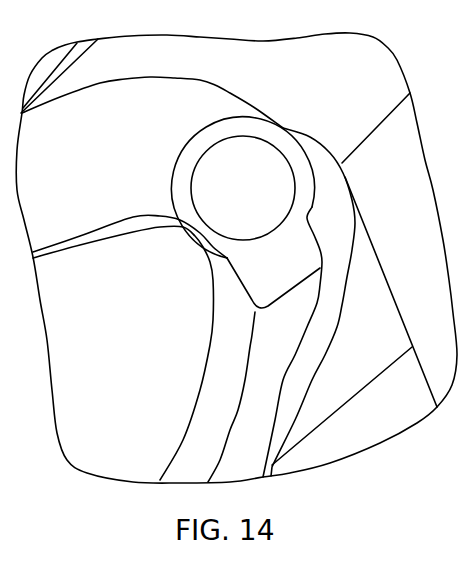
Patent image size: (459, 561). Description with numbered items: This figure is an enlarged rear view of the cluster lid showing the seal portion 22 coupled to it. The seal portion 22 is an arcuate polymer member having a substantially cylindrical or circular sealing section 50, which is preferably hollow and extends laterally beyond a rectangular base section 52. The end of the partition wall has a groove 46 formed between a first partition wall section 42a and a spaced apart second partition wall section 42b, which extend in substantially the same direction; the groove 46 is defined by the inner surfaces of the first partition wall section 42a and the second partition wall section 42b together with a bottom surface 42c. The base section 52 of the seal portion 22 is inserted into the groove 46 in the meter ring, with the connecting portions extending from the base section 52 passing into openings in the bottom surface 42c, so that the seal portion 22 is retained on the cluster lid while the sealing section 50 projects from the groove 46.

The seal portion 22 is at (127, 117).
The sealing section 50 is at (270, 133).
The rectangular base section 52 is at (298, 252).
The groove 46 is at (293, 310).
The first partition wall section 42a is at (332, 388).
The second partition wall section 42b is at (230, 353).
The bottom surface 42c is at (278, 340).